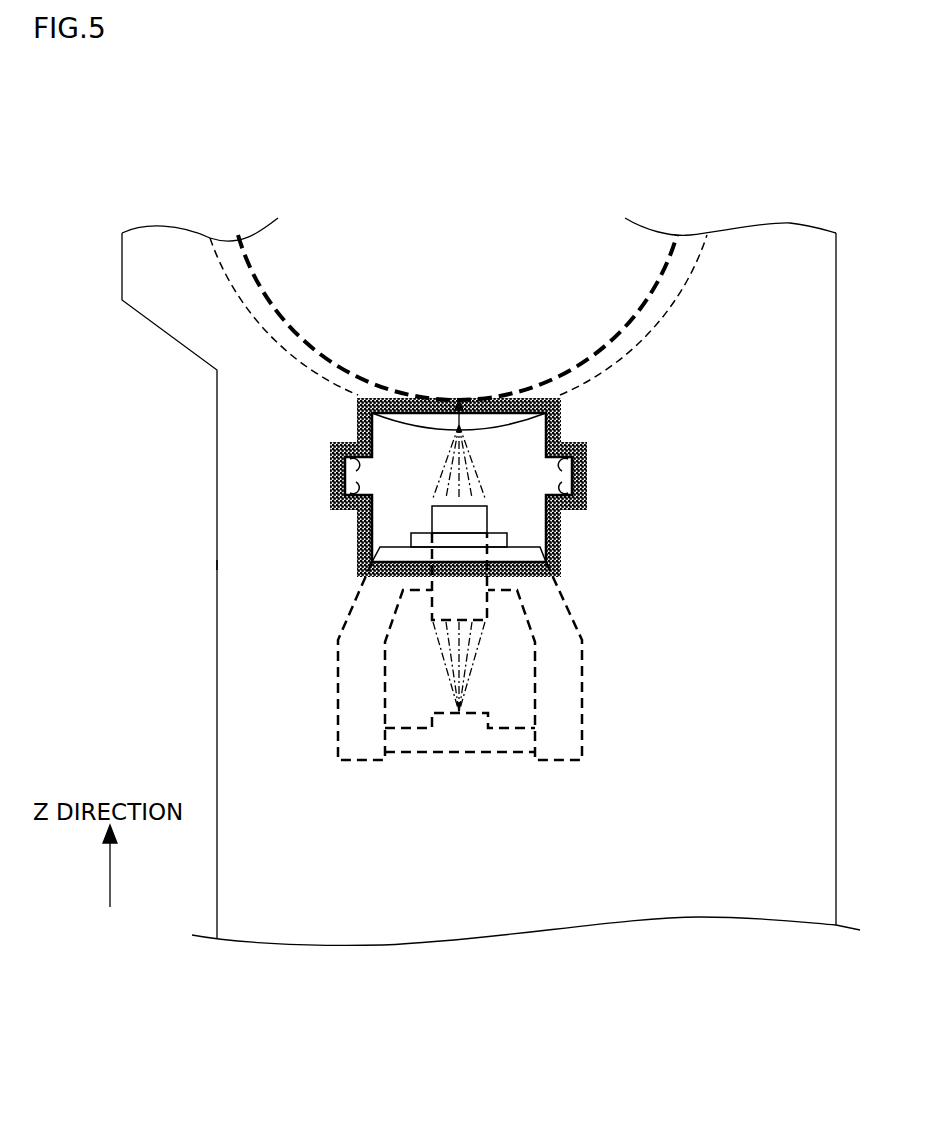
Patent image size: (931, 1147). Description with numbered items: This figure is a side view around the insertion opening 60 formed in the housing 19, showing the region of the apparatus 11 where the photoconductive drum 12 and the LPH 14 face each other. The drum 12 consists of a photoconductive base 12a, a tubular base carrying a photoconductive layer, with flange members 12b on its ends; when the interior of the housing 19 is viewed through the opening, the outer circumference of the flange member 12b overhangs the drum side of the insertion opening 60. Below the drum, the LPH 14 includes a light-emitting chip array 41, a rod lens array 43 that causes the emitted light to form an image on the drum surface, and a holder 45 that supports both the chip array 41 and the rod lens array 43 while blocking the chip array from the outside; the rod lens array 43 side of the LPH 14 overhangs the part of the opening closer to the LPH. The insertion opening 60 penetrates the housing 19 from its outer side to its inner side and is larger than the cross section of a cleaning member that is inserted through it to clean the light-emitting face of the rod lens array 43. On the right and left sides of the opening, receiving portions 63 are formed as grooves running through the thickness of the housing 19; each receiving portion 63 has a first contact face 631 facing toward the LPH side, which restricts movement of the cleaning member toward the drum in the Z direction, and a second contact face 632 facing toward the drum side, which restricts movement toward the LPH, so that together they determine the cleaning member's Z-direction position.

The optical device body 11 is at (192, 166).
The photoconductive drum 12 is at (653, 382).
The photoconductive base 12a is at (630, 325).
The flange member 12b is at (400, 428).
The housing 19 is at (217, 565).
The insertion opening 60 is at (556, 524).
The receiving portion 63 is at (363, 481).
The first contact face 631 is at (350, 459).
The second contact face 632 is at (350, 493).
The rod lens array 43 is at (430, 514).
The holder 45 is at (338, 673).
The light-emitting chip array 41 is at (488, 722).
The LPH 14 is at (598, 708).